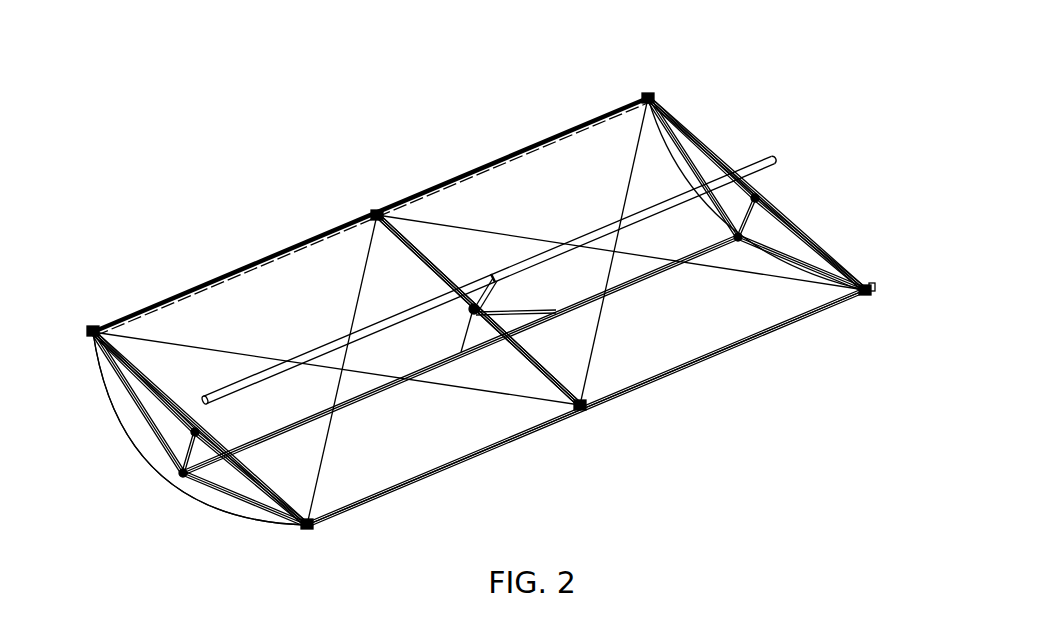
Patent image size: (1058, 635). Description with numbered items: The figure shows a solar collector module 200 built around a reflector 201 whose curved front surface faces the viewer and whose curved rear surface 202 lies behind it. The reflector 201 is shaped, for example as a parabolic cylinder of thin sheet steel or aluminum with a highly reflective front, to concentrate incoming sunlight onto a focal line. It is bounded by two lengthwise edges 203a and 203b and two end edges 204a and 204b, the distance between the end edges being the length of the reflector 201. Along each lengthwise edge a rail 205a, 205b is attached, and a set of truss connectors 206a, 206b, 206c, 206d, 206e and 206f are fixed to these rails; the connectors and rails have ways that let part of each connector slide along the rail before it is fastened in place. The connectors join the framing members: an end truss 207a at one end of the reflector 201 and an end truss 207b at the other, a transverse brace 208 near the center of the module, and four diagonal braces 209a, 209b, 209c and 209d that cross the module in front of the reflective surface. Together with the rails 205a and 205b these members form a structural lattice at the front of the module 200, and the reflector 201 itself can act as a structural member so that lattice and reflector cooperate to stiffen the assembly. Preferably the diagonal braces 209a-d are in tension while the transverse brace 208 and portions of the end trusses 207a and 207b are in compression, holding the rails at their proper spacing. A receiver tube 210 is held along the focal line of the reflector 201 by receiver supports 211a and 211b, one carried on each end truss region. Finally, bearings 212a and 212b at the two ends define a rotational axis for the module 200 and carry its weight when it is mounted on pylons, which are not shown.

The solar collector module 200 is at (266, 178).
The reflector 201 is at (392, 432).
The curved rear surface 202 is at (122, 424).
The lengthwise edge 203a is at (538, 448).
The lengthwise edge 203b is at (218, 270).
The end edge 204a is at (213, 497).
The end edge 204b is at (690, 125).
The rail 205a is at (685, 367).
The rail 205b is at (437, 184).
The truss connector 206a is at (93, 328).
The truss connector 206b is at (375, 206).
The truss connector 206c is at (655, 92).
The truss connector 206d is at (315, 535).
The truss connector 206e is at (585, 412).
The truss connector 206f is at (867, 300).
The end truss 207a is at (153, 447).
The end truss 207b is at (790, 253).
The transverse brace 208 is at (543, 383).
The diagonal brace 209a is at (205, 347).
The diagonal brace 209b is at (360, 280).
The diagonal brace 209c is at (482, 228).
The diagonal brace 209d is at (633, 165).
The receiver tube 210 is at (750, 157).
The receiver support 211a is at (763, 182).
The receiver support 211b is at (468, 313).
The bearing 212a is at (207, 427).
The bearing 212b is at (727, 225).